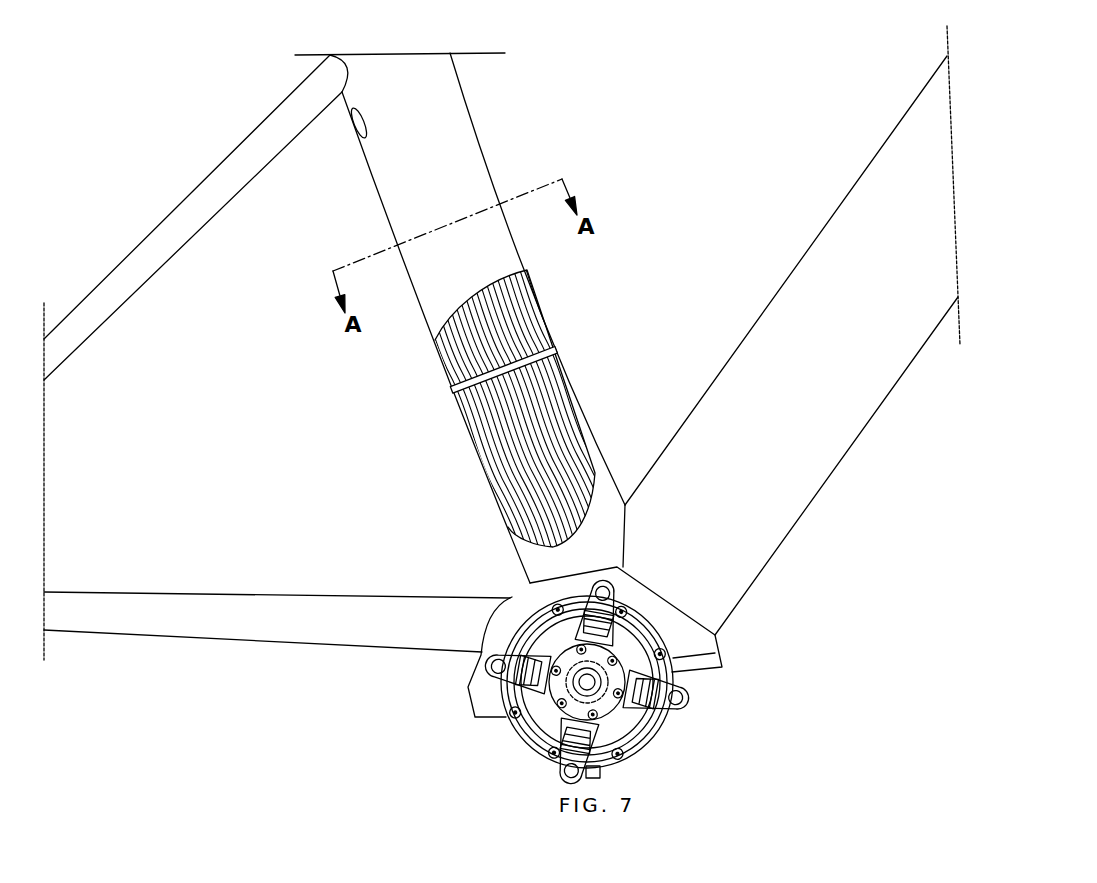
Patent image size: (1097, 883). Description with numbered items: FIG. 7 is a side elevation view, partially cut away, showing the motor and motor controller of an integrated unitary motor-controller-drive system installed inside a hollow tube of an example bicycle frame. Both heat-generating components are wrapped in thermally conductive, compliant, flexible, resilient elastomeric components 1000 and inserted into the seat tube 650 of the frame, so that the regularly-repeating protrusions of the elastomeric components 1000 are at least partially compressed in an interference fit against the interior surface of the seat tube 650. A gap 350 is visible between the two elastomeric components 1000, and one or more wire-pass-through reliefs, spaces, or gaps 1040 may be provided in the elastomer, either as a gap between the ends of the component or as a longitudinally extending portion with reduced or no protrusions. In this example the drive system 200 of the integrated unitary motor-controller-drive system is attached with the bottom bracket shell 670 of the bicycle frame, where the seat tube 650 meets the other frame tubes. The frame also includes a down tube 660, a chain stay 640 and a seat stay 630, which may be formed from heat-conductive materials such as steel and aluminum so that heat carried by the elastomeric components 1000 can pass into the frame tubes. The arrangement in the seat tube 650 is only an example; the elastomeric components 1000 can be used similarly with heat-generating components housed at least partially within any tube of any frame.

The drive system 200 is at (686, 754).
The gap 350 is at (458, 390).
The seat stay 630 is at (196, 200).
The chain stay 640 is at (297, 625).
The seat tube 650 is at (449, 160).
The down tube 660 is at (777, 476).
The bottom bracket shell 670 is at (713, 645).
The elastomeric component 1000 is at (507, 405).
The wire-pass-through relief 1040 is at (483, 349).